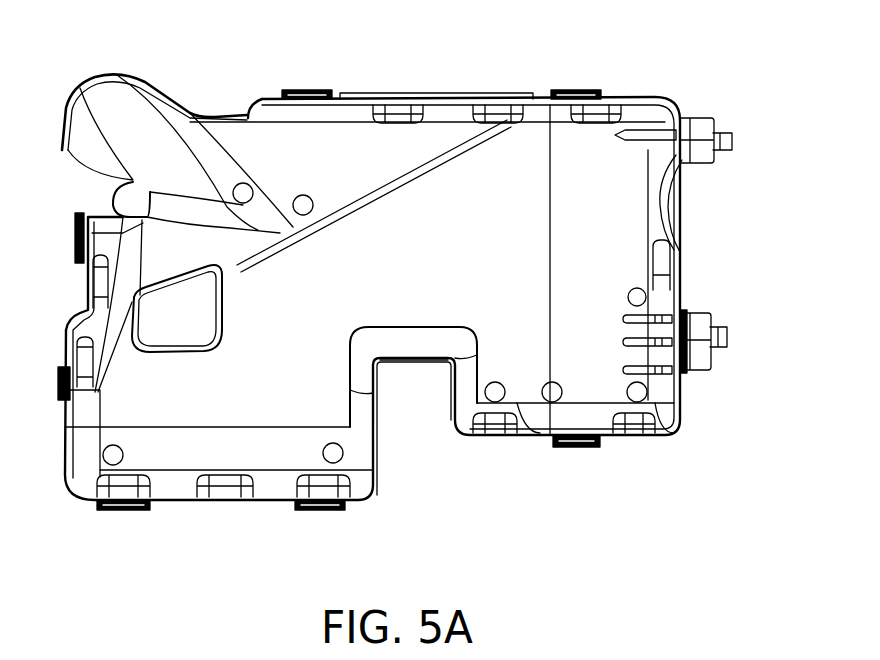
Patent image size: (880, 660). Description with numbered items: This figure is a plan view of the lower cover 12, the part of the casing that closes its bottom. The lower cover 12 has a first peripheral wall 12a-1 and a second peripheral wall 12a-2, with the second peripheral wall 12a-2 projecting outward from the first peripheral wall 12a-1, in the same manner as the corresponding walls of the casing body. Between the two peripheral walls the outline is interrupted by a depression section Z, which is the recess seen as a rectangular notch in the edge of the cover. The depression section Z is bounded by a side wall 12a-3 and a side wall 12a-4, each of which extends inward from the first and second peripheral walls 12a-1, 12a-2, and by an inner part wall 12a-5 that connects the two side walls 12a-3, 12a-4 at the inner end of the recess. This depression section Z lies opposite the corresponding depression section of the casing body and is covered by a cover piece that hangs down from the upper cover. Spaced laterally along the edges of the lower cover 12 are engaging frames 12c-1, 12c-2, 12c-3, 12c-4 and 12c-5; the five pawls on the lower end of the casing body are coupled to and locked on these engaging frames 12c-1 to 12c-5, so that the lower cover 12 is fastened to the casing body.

The lower cover 12 is at (704, 211).
The first peripheral wall 12a-1 is at (237, 499).
The second peripheral wall 12a-2 is at (537, 437).
The side wall 12a-3 is at (371, 406).
The side wall 12a-4 is at (476, 390).
The inner part wall 12a-5 is at (408, 355).
The engaging frame 12c-1 is at (310, 89).
The engaging frame 12c-2 is at (570, 89).
The engaging frame 12c-3 is at (575, 447).
The engaging frame 12c-4 is at (332, 511).
The engaging frame 12c-5 is at (123, 511).
The depression section Z is at (412, 439).